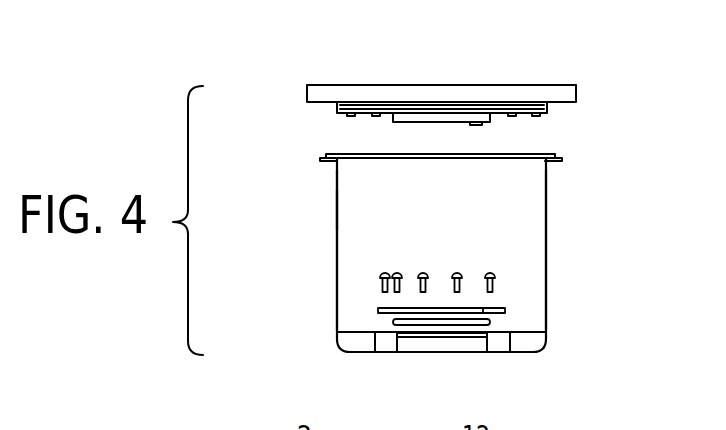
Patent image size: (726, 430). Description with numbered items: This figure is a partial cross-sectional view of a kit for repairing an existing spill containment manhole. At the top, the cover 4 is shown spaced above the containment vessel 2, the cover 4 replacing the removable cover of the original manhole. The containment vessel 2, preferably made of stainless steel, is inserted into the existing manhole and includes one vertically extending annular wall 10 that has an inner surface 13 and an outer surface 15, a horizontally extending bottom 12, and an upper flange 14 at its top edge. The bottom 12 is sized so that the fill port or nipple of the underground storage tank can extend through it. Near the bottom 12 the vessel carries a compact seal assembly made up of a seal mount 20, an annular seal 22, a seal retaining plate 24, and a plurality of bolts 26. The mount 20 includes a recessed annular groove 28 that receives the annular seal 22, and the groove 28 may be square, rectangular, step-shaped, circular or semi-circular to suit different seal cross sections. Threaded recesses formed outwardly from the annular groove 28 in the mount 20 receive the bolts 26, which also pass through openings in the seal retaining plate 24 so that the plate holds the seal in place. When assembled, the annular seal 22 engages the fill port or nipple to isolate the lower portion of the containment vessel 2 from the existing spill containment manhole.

The containment vessel 2 is at (568, 212).
The cover 4 is at (600, 90).
The annular wall 10 is at (546, 255).
The bottom 12 is at (520, 353).
The inner surface 13 is at (337, 208).
The upper flange 14 is at (590, 152).
The outer surface 15 is at (337, 206).
The seal mount 20 is at (375, 340).
The annular seal 22 is at (393, 322).
The seal retaining plate 24 is at (507, 310).
The bolts 26 is at (382, 289).
The annular groove 28 is at (428, 335).